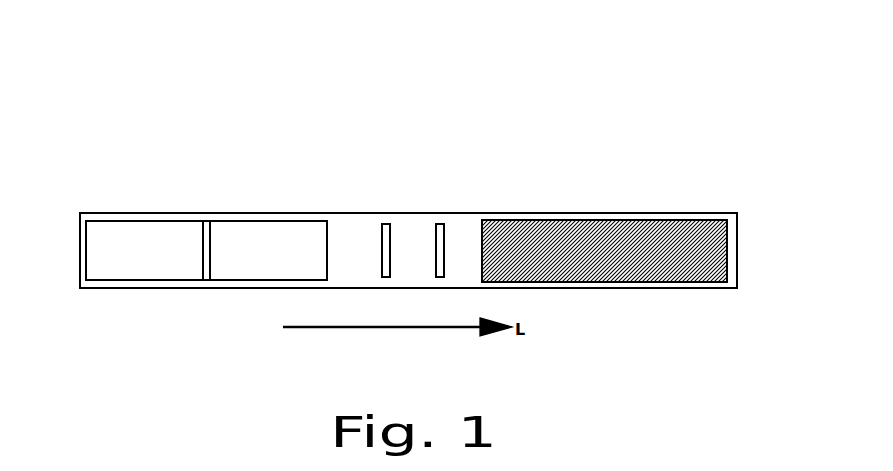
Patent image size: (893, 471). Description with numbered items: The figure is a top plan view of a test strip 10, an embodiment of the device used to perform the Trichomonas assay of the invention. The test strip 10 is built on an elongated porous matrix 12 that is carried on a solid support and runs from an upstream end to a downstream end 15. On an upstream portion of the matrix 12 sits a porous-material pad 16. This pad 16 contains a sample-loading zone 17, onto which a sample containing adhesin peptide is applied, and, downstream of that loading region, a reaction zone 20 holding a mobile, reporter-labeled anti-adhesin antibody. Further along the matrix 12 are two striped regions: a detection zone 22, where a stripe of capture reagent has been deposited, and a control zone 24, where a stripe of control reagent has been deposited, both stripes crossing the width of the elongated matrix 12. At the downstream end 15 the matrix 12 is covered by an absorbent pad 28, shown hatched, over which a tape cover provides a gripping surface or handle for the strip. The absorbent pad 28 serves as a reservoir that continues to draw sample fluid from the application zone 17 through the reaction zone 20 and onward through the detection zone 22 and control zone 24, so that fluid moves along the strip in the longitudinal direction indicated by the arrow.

The test strip 10 is at (418, 178).
The elongated porous matrix 12 is at (80, 260).
The downstream end 15 is at (737, 281).
The porous-material pad 16 is at (279, 266).
The sample-loading zone 17 is at (158, 266).
The reaction zone 20 is at (212, 242).
The detection zone 22 is at (381, 231).
The control zone 24 is at (445, 231).
The absorbent pad 28 is at (652, 221).